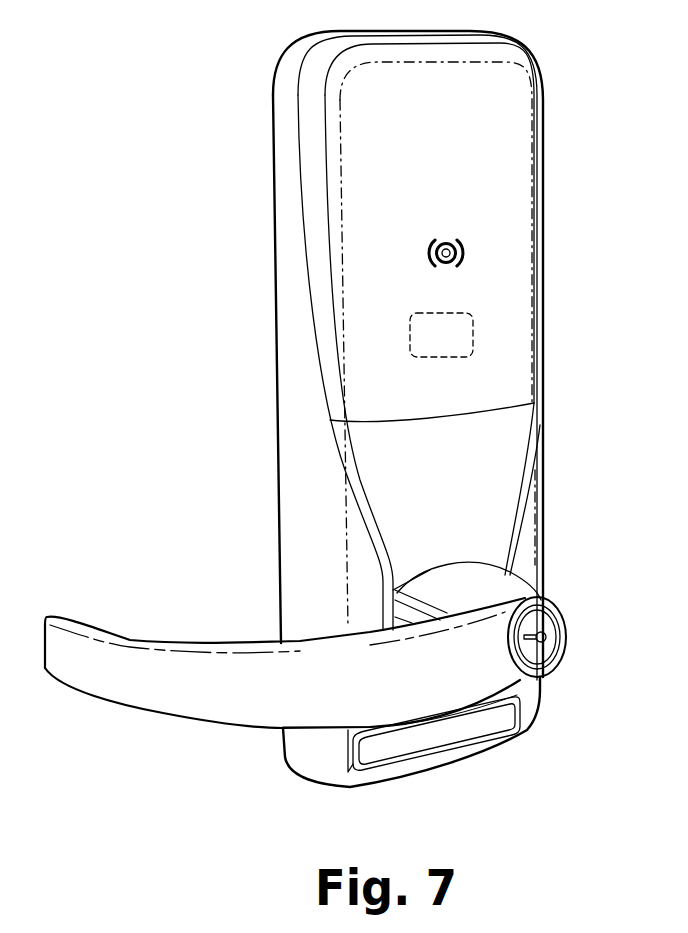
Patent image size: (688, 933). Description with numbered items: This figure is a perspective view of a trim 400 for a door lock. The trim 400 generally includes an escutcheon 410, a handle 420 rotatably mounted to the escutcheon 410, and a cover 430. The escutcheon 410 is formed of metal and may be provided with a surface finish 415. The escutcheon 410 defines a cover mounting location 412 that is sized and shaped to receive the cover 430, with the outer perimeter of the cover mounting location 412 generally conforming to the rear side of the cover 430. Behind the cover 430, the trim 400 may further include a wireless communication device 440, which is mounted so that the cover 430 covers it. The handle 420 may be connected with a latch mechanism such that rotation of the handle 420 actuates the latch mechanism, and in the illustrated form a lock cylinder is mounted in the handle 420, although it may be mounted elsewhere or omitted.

The trim 400 is at (172, 62).
The escutcheon 410 is at (292, 433).
The cover mounting location 412 is at (278, 197).
The surface finish 415 is at (503, 463).
The handle 420 is at (503, 578).
The cover 430 is at (513, 210).
The wireless communication device 440 is at (473, 340).